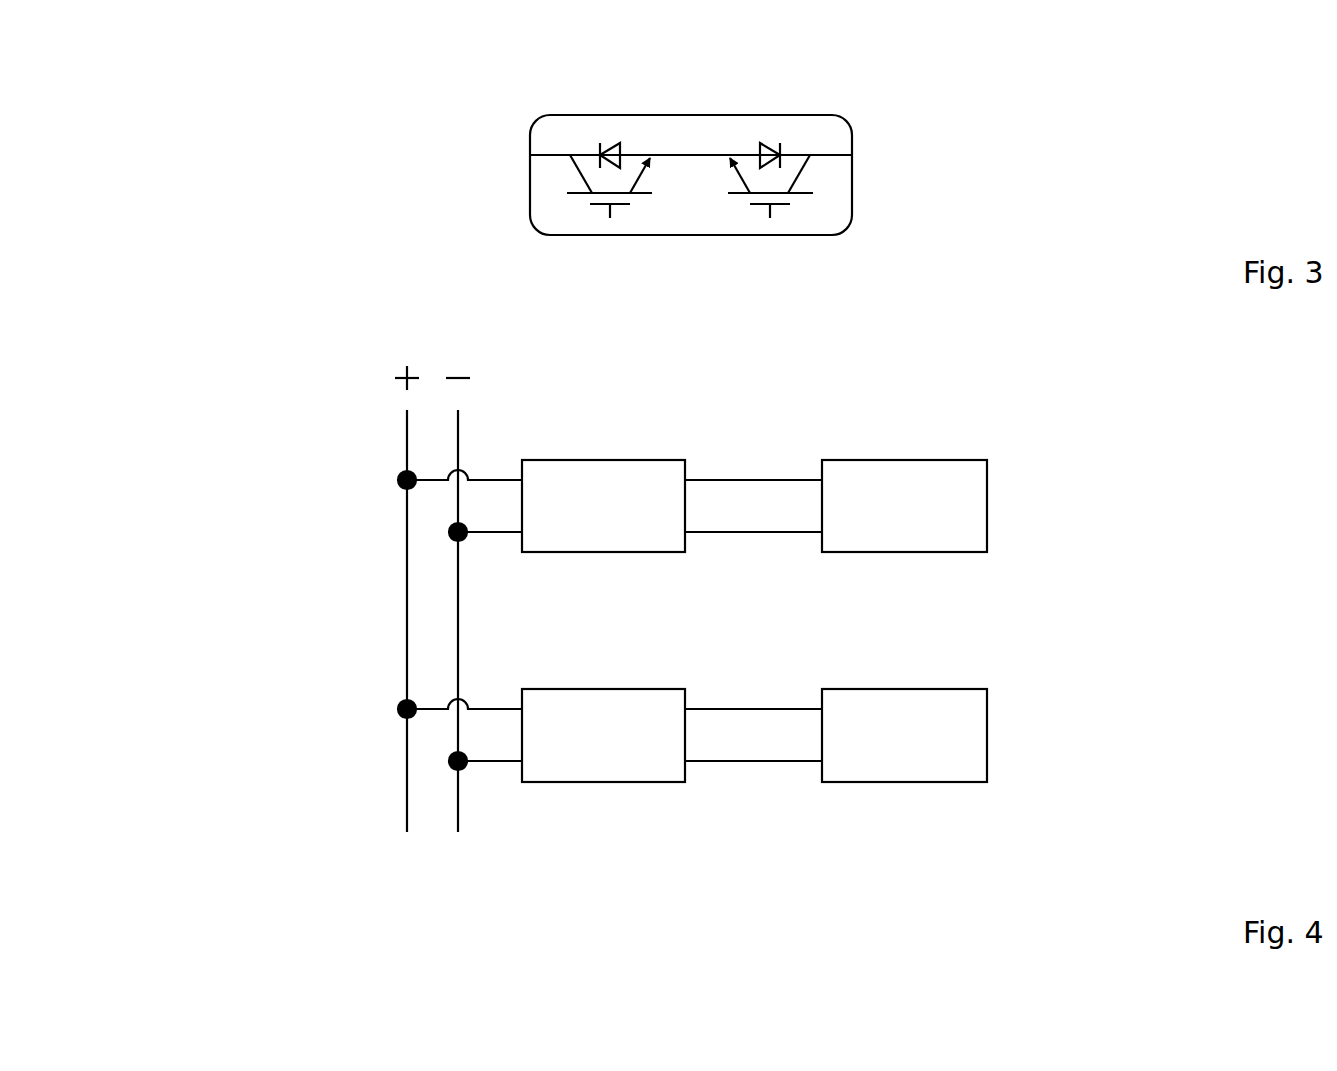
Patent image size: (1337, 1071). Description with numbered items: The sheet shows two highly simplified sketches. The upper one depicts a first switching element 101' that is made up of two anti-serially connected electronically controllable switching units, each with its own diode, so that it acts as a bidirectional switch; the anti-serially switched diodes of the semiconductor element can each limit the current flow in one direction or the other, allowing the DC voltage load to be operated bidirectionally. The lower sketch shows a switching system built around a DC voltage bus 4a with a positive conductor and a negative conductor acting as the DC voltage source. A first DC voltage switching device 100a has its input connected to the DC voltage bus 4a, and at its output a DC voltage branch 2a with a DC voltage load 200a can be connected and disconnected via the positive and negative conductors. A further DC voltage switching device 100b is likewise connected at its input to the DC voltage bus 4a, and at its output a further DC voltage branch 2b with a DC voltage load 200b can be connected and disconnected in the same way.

In FIG. 3, the first switching element 101' is at (702, 131).
In FIG. 4, the DC voltage bus 4a is at (430, 603).
In FIG. 4, the first DC voltage switching device 100a is at (603, 506).
In FIG. 4, the DC voltage branch 2a is at (753, 506).
In FIG. 4, the DC voltage load 200a is at (904, 506).
In FIG. 4, the further DC voltage switching device 100b is at (603, 735).
In FIG. 4, the further DC voltage branch 2b is at (753, 735).
In FIG. 4, the DC voltage load 200b is at (904, 735).